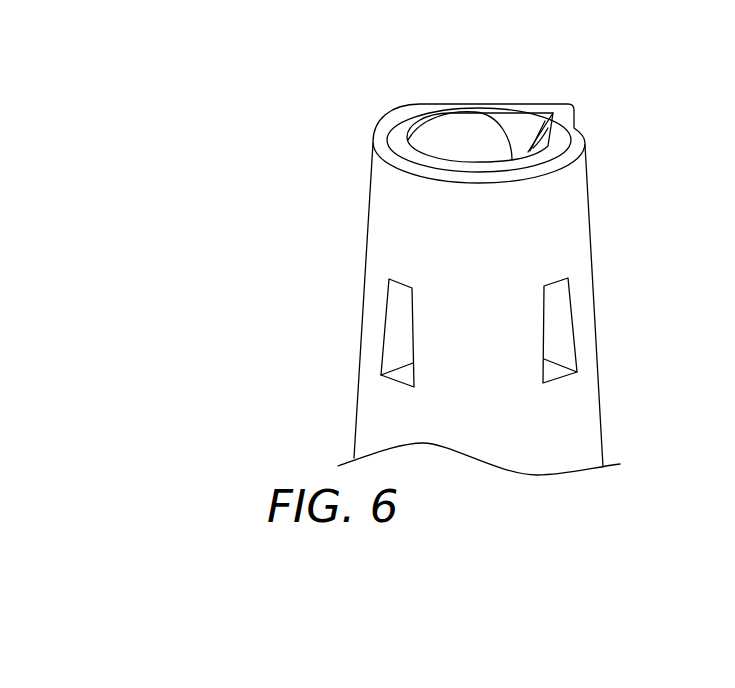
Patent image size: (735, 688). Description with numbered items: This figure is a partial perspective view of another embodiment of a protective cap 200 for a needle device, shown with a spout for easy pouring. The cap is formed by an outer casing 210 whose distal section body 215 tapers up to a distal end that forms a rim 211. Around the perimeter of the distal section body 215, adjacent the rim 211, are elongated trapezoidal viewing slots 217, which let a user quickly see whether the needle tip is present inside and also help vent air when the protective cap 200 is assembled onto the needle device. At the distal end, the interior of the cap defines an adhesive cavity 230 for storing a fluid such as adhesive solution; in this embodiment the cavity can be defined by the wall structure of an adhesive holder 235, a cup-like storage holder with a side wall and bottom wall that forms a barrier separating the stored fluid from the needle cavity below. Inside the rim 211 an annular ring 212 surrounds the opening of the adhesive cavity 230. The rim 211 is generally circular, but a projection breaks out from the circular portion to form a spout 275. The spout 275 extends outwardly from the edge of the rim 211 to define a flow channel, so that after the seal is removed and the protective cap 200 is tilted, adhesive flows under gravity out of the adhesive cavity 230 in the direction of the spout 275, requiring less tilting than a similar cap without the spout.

The protective cap 200 is at (335, 237).
The outer casing 210 is at (625, 405).
The distal section body 215 is at (592, 243).
The viewing slots 217 is at (571, 313).
The rim 211 is at (415, 122).
The inner annular ring 212 is at (455, 128).
The adhesive cavity 230 is at (445, 146).
The adhesive holder 235 is at (510, 130).
The spout 275 is at (563, 101).